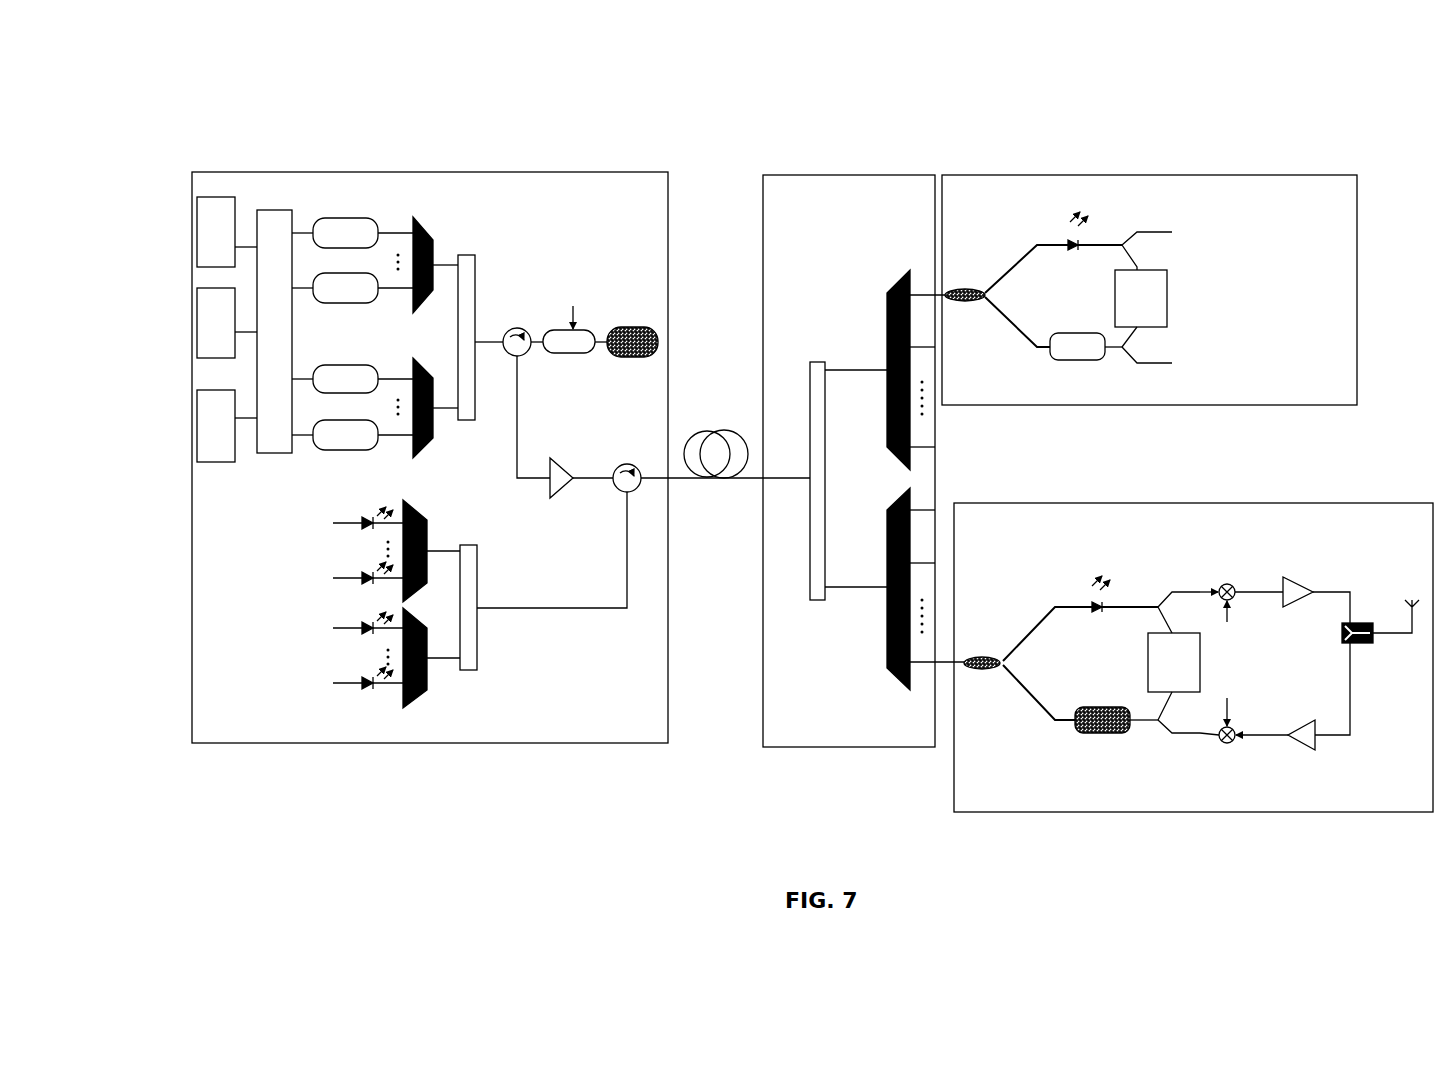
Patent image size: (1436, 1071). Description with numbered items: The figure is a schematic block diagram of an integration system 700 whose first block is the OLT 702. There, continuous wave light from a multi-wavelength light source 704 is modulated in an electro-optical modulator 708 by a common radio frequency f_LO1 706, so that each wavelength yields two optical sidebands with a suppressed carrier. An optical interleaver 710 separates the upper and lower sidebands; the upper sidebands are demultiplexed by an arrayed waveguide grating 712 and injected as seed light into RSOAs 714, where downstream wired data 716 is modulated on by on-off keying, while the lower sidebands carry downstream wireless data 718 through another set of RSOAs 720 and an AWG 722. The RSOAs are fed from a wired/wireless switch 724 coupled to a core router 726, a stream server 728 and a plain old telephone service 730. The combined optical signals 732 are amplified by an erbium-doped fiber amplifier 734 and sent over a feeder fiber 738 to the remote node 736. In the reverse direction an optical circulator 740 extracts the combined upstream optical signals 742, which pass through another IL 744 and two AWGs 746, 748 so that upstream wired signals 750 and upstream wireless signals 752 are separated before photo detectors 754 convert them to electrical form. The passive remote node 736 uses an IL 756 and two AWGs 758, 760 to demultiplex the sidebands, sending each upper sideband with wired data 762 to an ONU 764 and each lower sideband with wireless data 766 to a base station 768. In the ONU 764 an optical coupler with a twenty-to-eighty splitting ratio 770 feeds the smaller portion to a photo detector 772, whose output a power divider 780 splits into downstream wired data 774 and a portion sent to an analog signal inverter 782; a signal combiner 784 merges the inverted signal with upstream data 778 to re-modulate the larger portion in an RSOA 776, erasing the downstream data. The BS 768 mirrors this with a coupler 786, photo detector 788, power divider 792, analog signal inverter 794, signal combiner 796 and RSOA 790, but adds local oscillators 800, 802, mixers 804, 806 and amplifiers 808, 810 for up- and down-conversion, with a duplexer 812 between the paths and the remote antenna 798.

The integration system 700 is at (1280, 150).
The OLT 702 is at (414, 770).
The multi-wavelength light source 704 is at (634, 326).
The common radio frequency f_LO1 706 is at (574, 290).
The electro-optical modulator 708 is at (600, 374).
The optical interleaver 710 is at (466, 256).
The arrayed waveguide grating 712 is at (422, 224).
The RSOA 714 is at (352, 250).
The downstream wired data 716 is at (333, 175).
The downstream wireless data 718 is at (395, 366).
The RSOAs 720 is at (352, 396).
The AWG 722 is at (424, 448).
The wired/wireless switch 724 is at (282, 212).
The core router 726 is at (222, 206).
The stream server 728 is at (220, 300).
The plain old telephone service 730 is at (222, 454).
The combined optical signals 732 is at (604, 415).
The erbium-doped fiber amplifier 734 is at (578, 512).
The remote node 736 is at (847, 772).
The feeder fiber 738 is at (722, 394).
The optical circulator 740 is at (612, 482).
The combined upstream optical signals 742 is at (552, 578).
The IL 744 is at (477, 670).
The AWG 746 is at (434, 538).
The AWG 748 is at (420, 696).
The upstream wired signals 750 is at (245, 575).
The upstream wireless signals 752 is at (242, 668).
The photo detectors 754 is at (366, 512).
The IL 756 is at (818, 570).
The AWG 758 is at (898, 272).
The AWG 760 is at (900, 690).
The wired data 762 is at (849, 308).
The ONU 764 is at (1134, 424).
The wireless data 766 is at (836, 648).
The base station 768 is at (1160, 490).
The optical coupler with 20:80 splitting ratio 770 is at (970, 303).
The photo detector 772 is at (1102, 290).
The downstream wired data 774 is at (1302, 232).
The RSOA 776 is at (1086, 362).
The upstream data 778 is at (1302, 322).
The power divider 780 is at (1178, 228).
The analog signal inverter 782 is at (1172, 322).
The signal combiner 784 is at (1190, 404).
The optical coupler with 20:80 splitting ratio 786 is at (986, 658).
The photo detector 788 is at (1112, 651).
The RSOA 790 is at (1122, 734).
The power divider 792 is at (1172, 572).
The analog signal inverter 794 is at (1152, 692).
The signal combiner 796 is at (1194, 774).
The antenna 798 is at (1406, 570).
The local oscillator 800 is at (1256, 625).
The local oscillator 802 is at (1243, 686).
The mixer 804 is at (1234, 589).
The mixer 806 is at (1232, 745).
The amplifier 808 is at (1307, 600).
The amplifier 810 is at (1305, 730).
The duplexer 812 is at (1370, 643).